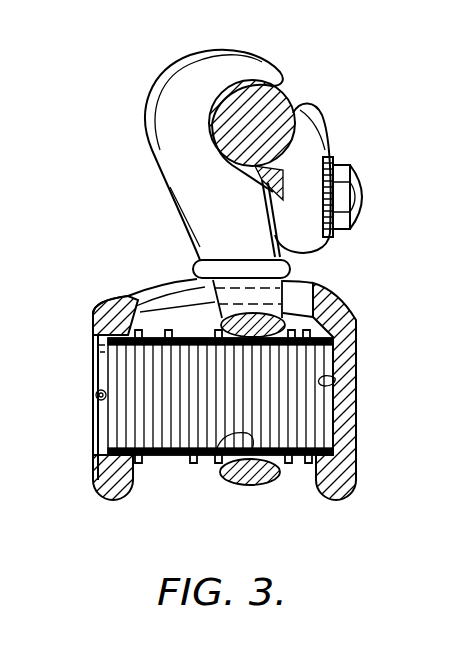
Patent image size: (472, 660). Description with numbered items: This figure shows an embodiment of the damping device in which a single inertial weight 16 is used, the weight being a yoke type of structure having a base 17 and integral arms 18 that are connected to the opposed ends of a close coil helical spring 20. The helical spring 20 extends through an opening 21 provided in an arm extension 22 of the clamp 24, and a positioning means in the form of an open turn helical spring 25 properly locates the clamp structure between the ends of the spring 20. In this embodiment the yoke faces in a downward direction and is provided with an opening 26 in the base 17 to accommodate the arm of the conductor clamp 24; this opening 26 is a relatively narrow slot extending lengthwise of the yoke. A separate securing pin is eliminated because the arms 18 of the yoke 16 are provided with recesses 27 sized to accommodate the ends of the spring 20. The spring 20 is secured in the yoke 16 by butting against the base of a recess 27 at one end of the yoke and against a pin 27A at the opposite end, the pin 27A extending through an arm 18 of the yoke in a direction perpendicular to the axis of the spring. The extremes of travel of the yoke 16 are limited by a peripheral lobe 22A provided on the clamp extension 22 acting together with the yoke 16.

The inertial weight 16 is at (362, 319).
The base 17 is at (112, 303).
The arms 18 is at (92, 348).
The close coil helical spring 20 is at (160, 457).
The opening 21 is at (205, 457).
The arm extension 22 is at (247, 482).
The peripheral lobe 22A is at (195, 270).
The clamp 24 is at (147, 126).
The open turn helical spring 25 is at (193, 460).
The opening 26 is at (290, 295).
The recesses 27 is at (335, 378).
The pin 27A is at (95, 395).